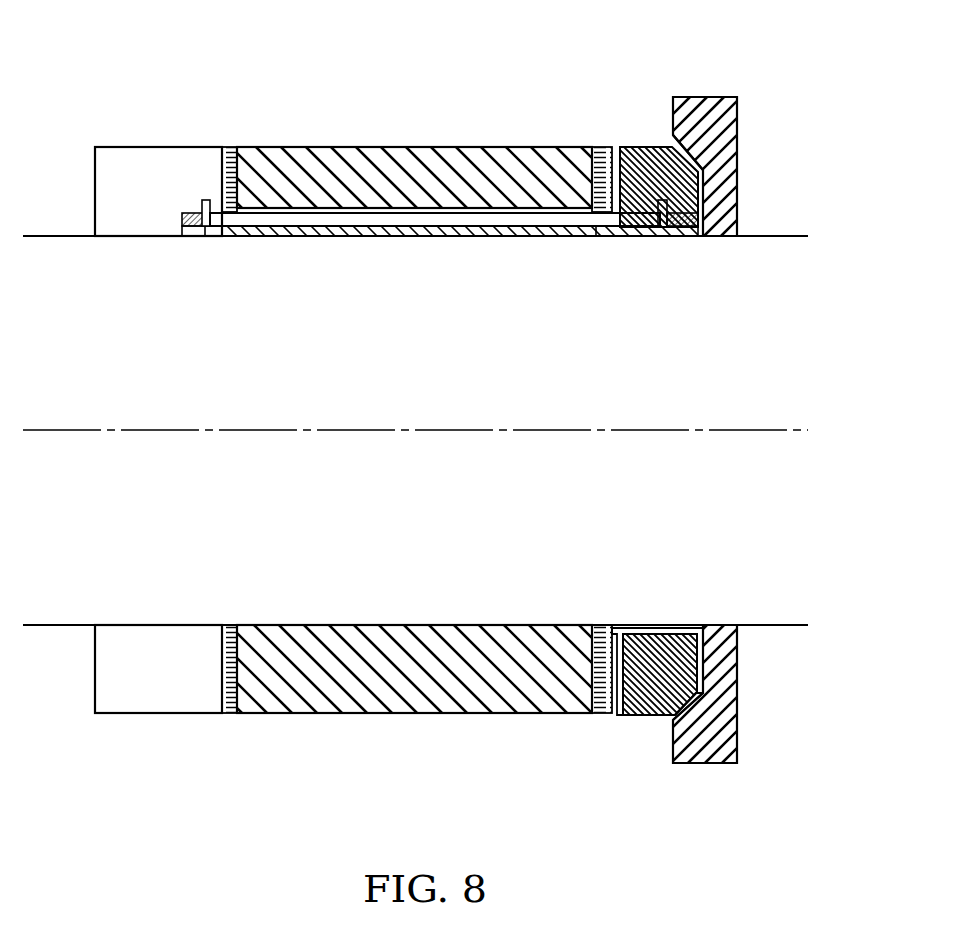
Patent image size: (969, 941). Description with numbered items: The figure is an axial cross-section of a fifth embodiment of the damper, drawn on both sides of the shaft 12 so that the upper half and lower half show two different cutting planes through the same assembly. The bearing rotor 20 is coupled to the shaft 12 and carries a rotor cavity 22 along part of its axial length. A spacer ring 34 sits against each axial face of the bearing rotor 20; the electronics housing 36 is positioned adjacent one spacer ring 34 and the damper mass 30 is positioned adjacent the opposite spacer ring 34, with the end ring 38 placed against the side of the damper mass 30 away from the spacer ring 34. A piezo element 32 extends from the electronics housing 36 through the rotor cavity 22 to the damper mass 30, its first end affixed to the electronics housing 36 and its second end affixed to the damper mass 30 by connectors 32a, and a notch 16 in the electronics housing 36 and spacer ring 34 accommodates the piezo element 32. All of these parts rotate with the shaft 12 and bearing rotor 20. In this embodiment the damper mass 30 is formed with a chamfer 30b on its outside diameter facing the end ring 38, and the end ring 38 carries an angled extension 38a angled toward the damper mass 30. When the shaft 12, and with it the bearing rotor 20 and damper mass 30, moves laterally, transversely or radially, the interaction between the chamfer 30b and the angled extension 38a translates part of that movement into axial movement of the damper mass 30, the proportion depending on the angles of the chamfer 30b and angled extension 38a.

The shaft 12 is at (300, 404).
The notch 16 is at (205, 238).
The bearing rotor 20 is at (372, 147).
The rotor cavity 22 is at (432, 220).
The damper mass 30 is at (660, 147).
The chamfer 30b is at (647, 715).
The piezo element 32 is at (333, 231).
The connector 32a is at (195, 205).
The spacer ring 34 is at (230, 147).
The electronics housing 36 is at (142, 192).
The end ring 38 is at (714, 99).
The angled extension 38a is at (683, 140).